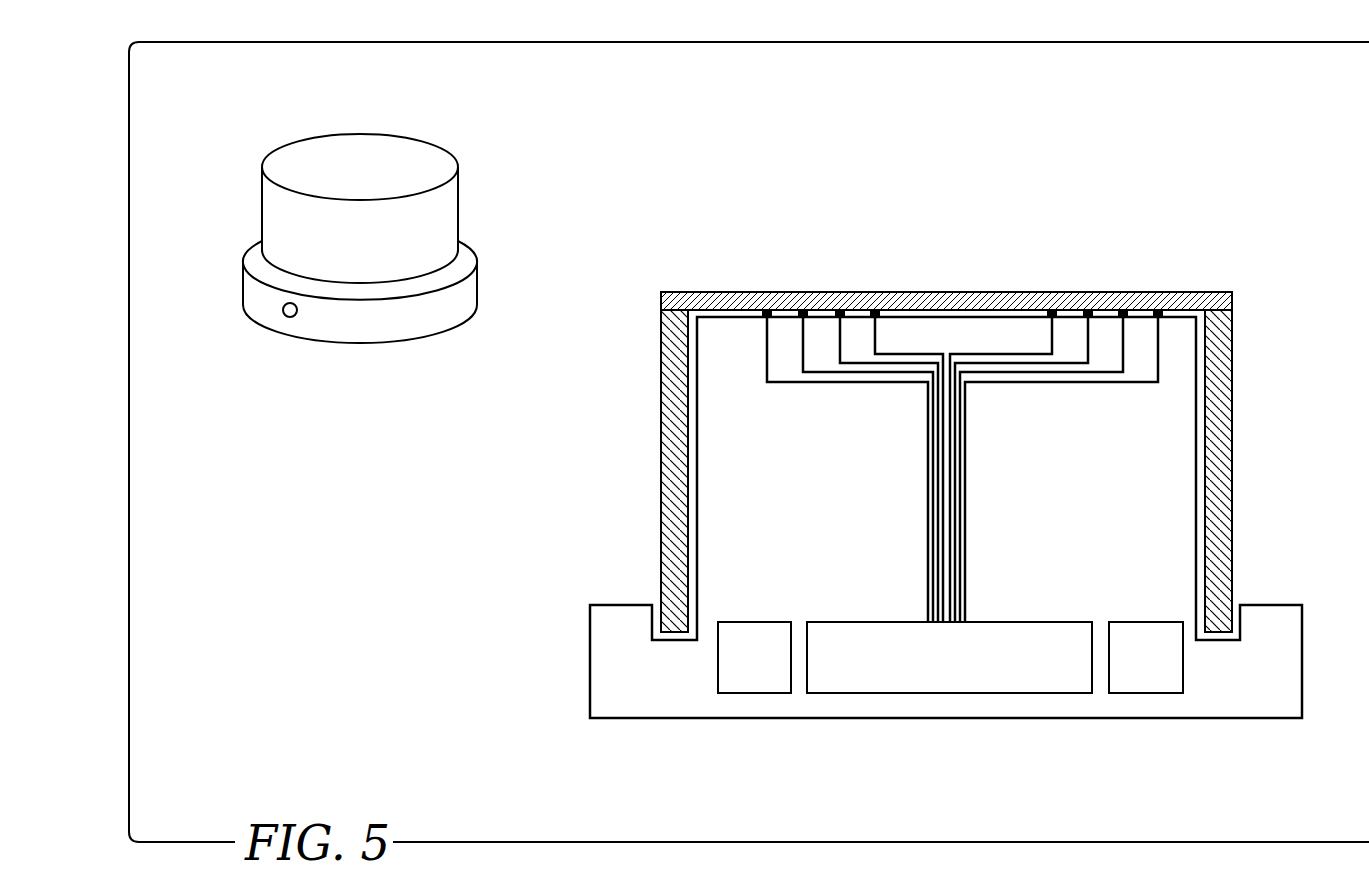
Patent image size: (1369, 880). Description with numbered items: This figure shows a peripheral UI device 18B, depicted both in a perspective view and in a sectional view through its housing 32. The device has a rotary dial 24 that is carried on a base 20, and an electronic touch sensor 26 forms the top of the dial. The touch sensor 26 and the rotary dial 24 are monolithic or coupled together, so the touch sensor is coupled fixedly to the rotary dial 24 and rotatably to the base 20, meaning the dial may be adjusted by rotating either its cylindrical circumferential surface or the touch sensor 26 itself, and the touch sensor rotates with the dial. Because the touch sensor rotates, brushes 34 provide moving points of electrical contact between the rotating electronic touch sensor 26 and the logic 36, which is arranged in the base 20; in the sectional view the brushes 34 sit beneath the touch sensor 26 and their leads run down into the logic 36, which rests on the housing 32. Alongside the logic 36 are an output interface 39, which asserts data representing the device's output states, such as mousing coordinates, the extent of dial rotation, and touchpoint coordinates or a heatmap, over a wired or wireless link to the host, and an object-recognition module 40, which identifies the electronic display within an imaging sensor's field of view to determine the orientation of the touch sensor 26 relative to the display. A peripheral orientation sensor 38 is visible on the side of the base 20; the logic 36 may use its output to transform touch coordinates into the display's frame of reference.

The peripheral UI device 18B is at (497, 161).
The base 20 is at (453, 317).
The rotary dial 24 is at (320, 242).
The electronic touch sensor 26 is at (1075, 233).
The housing base 32 is at (1238, 603).
The brushes 34 is at (763, 320).
The logic 36 is at (963, 667).
The peripheral orientation sensor 38 is at (293, 318).
The output interface 39 is at (768, 667).
The object-recognition module 40 is at (1159, 667).